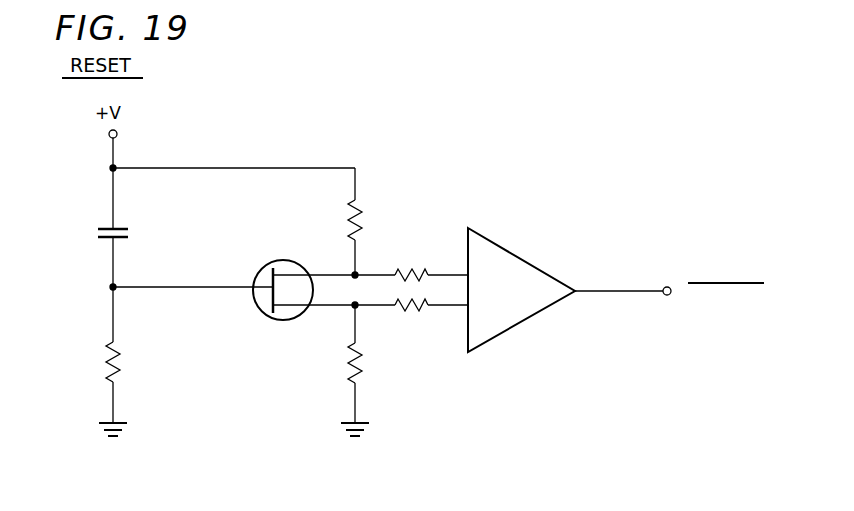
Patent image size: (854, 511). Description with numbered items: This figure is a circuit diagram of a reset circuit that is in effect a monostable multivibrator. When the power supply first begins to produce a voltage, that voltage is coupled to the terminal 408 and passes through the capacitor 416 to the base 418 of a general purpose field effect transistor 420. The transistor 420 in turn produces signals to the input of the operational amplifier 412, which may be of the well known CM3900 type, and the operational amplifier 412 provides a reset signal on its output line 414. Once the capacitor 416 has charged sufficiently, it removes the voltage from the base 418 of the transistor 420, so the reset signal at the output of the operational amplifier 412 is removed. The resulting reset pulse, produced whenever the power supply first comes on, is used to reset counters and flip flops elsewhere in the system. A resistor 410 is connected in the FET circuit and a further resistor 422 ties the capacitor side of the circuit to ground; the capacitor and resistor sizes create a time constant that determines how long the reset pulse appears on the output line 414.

The terminal 408 is at (120, 133).
The resistor 410 is at (360, 218).
The operational amplifier 412 is at (527, 316).
The output line 414 is at (668, 296).
The capacitor 416 is at (98, 232).
The base 418 is at (178, 288).
The general purpose field effect transistor 420 is at (295, 318).
The resistor 422 is at (108, 365).